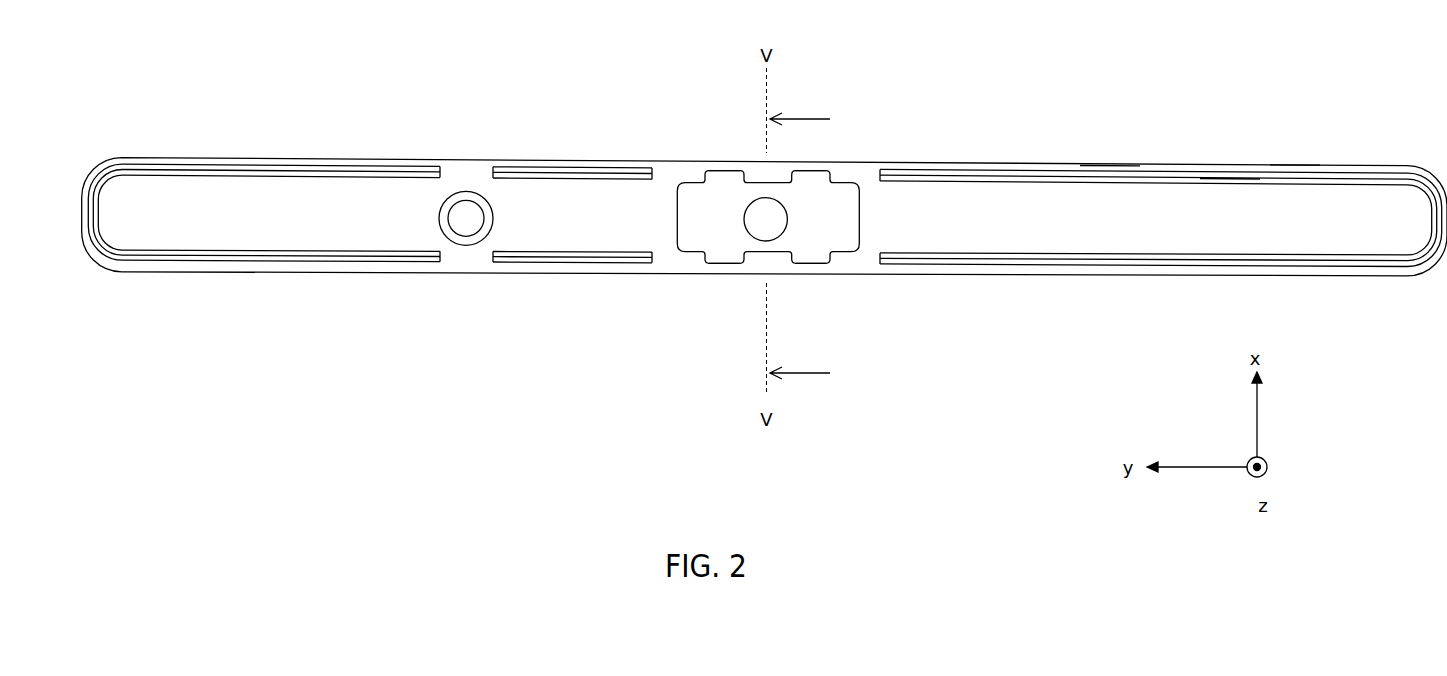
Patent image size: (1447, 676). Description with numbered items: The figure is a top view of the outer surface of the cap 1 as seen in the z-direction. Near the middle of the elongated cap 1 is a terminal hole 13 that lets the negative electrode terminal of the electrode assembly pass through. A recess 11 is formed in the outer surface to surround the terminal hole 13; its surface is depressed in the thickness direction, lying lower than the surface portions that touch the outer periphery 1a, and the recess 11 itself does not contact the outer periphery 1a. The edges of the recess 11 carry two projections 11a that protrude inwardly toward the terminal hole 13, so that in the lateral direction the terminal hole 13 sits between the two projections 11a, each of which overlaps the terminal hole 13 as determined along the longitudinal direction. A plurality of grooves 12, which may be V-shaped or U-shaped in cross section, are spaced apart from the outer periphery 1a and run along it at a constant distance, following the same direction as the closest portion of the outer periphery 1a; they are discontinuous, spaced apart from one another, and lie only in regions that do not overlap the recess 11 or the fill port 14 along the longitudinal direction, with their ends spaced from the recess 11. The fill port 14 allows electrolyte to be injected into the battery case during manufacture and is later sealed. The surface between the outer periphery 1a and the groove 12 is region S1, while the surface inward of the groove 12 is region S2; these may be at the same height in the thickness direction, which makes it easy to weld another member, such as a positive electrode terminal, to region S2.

The cap 1 is at (258, 158).
The outer periphery 1a is at (1110, 165).
The recess 11 is at (855, 219).
The projection 11a is at (751, 178).
The groove 12 is at (362, 167).
The terminal hole 13 is at (787, 227).
The fill port 14 is at (468, 245).
The region S1 is at (1293, 168).
The region S2 is at (1287, 222).